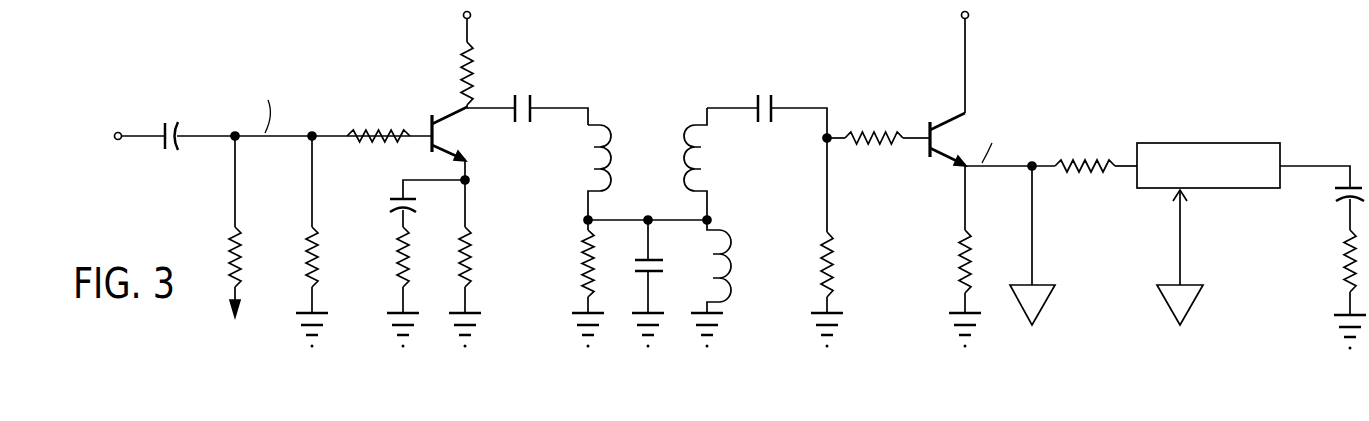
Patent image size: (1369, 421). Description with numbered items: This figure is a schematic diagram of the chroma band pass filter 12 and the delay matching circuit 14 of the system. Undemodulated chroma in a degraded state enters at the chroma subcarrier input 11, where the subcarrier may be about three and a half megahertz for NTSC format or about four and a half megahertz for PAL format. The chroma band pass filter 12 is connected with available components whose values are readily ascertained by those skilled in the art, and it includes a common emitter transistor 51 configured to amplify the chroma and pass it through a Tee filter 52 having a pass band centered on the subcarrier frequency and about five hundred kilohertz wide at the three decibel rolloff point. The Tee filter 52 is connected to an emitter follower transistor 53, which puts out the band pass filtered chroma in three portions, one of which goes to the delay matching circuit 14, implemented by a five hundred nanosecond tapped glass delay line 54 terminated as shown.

The chroma subcarrier input 11 is at (171, 136).
The chroma band pass filter 12 is at (547, 330).
The delay matching circuit 14 is at (1182, 133).
The common emitter transistor 51 is at (437, 135).
The Tee filter 52 is at (636, 162).
The emitter follower transistor 53 is at (936, 137).
The tapped glass delay line 54 is at (1253, 150).